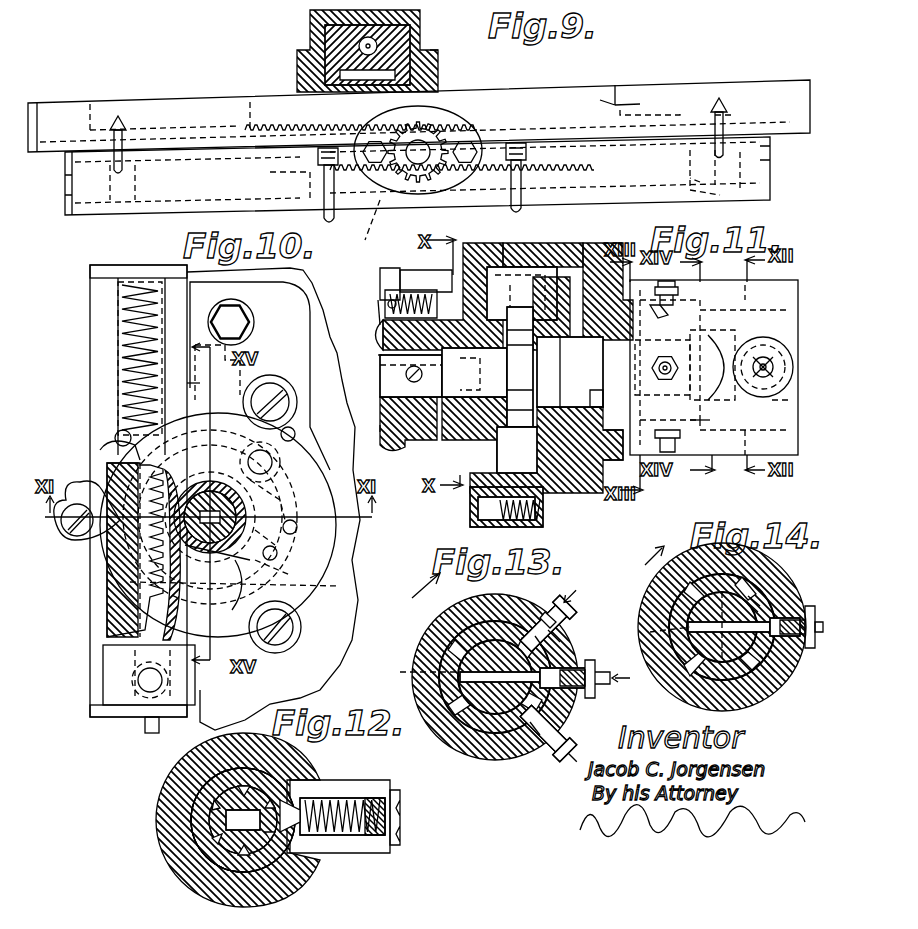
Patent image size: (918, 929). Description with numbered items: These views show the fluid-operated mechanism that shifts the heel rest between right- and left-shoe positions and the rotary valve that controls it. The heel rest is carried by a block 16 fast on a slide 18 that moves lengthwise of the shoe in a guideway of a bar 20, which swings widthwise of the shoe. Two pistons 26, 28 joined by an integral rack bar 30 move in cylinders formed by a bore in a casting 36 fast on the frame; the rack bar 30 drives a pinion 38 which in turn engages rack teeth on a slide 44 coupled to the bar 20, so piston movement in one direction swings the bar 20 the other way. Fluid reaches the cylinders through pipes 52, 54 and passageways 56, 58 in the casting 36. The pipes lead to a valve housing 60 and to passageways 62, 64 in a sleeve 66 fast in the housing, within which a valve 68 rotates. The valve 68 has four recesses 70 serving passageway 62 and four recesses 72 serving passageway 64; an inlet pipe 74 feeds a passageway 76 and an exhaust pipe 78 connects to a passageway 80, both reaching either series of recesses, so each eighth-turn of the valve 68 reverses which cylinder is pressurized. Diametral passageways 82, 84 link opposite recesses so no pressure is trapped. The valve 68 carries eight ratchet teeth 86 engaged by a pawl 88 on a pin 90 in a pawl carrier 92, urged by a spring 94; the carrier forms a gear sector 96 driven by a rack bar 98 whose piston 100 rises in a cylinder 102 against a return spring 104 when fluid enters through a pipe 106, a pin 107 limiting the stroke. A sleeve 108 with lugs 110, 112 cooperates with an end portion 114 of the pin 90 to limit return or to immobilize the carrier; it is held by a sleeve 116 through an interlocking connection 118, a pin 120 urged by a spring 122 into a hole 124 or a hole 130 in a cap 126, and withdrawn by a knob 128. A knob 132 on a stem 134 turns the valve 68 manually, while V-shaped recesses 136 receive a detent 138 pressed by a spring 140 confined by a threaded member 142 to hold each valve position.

In FIG. 9, the block 16 is at (410, 12).
In FIG. 9, the slide 18 is at (412, 32).
In FIG. 9, the bar 20 is at (438, 52).
In FIG. 9, the piston 26 is at (270, 180).
In FIG. 9, the piston 28 is at (695, 190).
In FIG. 9, the rack bar 30 is at (365, 224).
In FIG. 9, the casting 36 is at (750, 92).
In FIG. 9, the pinion 38 is at (446, 142).
In FIG. 9, the slide 44 is at (645, 90).
In FIG. 9, the pipe 52 is at (334, 212).
In FIG. 11, the pipe 52 is at (780, 360).
In FIG. 14, the pipe 52 is at (812, 640).
In FIG. 9, the pipe 54 is at (522, 202).
In FIG. 11, the pipe 54 is at (660, 380).
In FIG. 13, the pipe 54 is at (592, 680).
In FIG. 9, the passageway 56 is at (200, 148).
In FIG. 9, the passageway 58 is at (682, 150).
In FIG. 10, the valve housing 60 is at (208, 690).
In FIG. 11, the valve housing 60 is at (737, 455).
In FIG. 12, the valve housing 60 is at (175, 795).
In FIG. 13, the valve housing 60 is at (492, 762).
In FIG. 14, the valve housing 60 is at (650, 586).
In FIG. 11, the passageway 62 is at (738, 420).
In FIG. 14, the passageway 62 is at (790, 612).
In FIG. 11, the passageway 64 is at (582, 396).
In FIG. 13, the passageway 64 is at (560, 640).
In FIG. 11, the sleeve 66 is at (745, 280).
In FIG. 12, the sleeve 66 is at (285, 850).
In FIG. 13, the sleeve 66 is at (445, 635).
In FIG. 14, the sleeve 66 is at (705, 690).
In FIG. 11, the valve 68 is at (578, 262).
In FIG. 12, the valve 68 is at (225, 815).
In FIG. 13, the valve 68 is at (470, 710).
In FIG. 14, the valve 68 is at (690, 618).
In FIG. 11, the recesses 70 is at (712, 365).
In FIG. 14, the recesses 70 is at (692, 575).
In FIG. 11, the recesses 72 is at (570, 372).
In FIG. 13, the recesses 72 is at (510, 640).
In FIG. 11, the pipe 74 is at (680, 292).
In FIG. 13, the pipe 74 is at (568, 592).
In FIG. 11, the passageway 76 is at (655, 283).
In FIG. 13, the passageway 76 is at (560, 622).
In FIG. 14, the passageway 76 is at (760, 600).
In FIG. 11, the exhaust pipe 78 is at (662, 452).
In FIG. 13, the exhaust pipe 78 is at (558, 748).
In FIG. 11, the passageway 80 is at (690, 420).
In FIG. 13, the passageway 80 is at (525, 740).
In FIG. 14, the passageway 80 is at (778, 672).
In FIG. 14, the passageways 82 is at (665, 636).
In FIG. 13, the passageways 84 is at (416, 675).
In FIG. 10, the ratchet teeth 86 is at (238, 605).
In FIG. 11, the ratchet teeth 86 is at (533, 372).
In FIG. 10, the pawl 88 is at (290, 468).
In FIG. 11, the pawl 88 is at (528, 308).
In FIG. 10, the pin 90 is at (300, 450).
In FIG. 11, the pin 90 is at (474, 372).
In FIG. 10, the pawl carrier 92 is at (296, 526).
In FIG. 11, the pawl carrier 92 is at (555, 265).
In FIG. 10, the spring 94 is at (290, 492).
In FIG. 10, the gear sector 96 is at (143, 546).
In FIG. 10, the rack bar 98 is at (112, 473).
In FIG. 11, the rack bar 98 is at (565, 490).
In FIG. 10, the piston 100 is at (135, 662).
In FIG. 10, the cylinder 102 is at (130, 654).
In FIG. 10, the return spring 104 is at (120, 340).
In FIG. 10, the pipe 106 is at (143, 728).
In FIG. 10, the pin 107 is at (122, 322).
In FIG. 10, the sleeve 108 is at (278, 556).
In FIG. 11, the sleeve 108 is at (517, 450).
In FIG. 10, the lug 110 is at (252, 585).
In FIG. 10, the lug 112 is at (232, 425).
In FIG. 11, the end portion 114 is at (525, 270).
In FIG. 10, the sleeve 116 is at (212, 480).
In FIG. 11, the sleeve 116 is at (408, 442).
In FIG. 11, the interlocking connection 118 is at (411, 376).
In FIG. 11, the pin 120 is at (500, 262).
In FIG. 11, the spring 122 is at (428, 272).
In FIG. 10, the hole 124 is at (292, 436).
In FIG. 10, the cap 126 is at (292, 600).
In FIG. 11, the cap 126 is at (475, 490).
In FIG. 11, the knob 128 is at (385, 284).
In FIG. 10, the hole 130 is at (116, 436).
In FIG. 11, the knob 132 is at (380, 335).
In FIG. 11, the stem 134 is at (380, 360).
In FIG. 12, the V-shaped recesses 136 is at (218, 850).
In FIG. 12, the detent 138 is at (300, 806).
In FIG. 12, the spring 140 is at (355, 800).
In FIG. 12, the member 142 is at (395, 848).